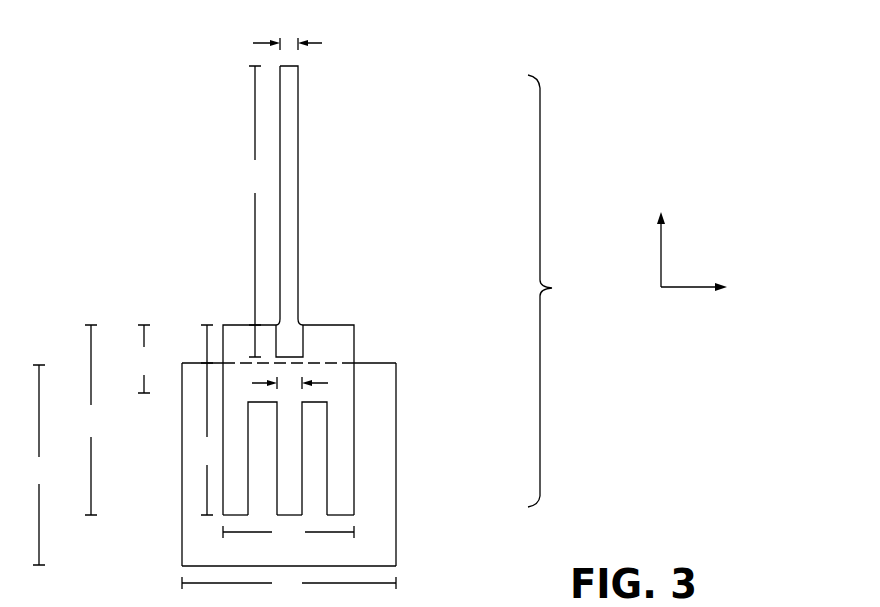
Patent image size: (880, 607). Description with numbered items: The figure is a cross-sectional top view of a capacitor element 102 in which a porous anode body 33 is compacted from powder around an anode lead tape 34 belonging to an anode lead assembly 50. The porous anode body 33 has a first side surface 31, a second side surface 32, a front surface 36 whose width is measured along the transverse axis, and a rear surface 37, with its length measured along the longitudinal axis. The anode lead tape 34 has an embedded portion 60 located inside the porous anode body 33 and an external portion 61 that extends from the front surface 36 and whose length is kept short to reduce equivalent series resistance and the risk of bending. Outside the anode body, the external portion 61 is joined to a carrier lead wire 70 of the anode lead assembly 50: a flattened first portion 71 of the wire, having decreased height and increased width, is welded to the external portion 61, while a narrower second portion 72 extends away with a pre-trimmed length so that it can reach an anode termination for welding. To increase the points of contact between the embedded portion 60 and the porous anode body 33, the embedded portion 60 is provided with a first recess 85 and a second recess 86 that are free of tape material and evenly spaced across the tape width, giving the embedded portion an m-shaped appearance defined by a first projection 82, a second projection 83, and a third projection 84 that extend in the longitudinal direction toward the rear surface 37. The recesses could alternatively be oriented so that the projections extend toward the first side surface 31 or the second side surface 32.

The capacitor element 102 is at (114, 158).
The anode lead assembly 50 is at (555, 291).
The carrier lead wire 70 is at (333, 113).
The second portion of the carrier lead wire 72 is at (298, 200).
The first portion of the carrier lead wire 71 is at (296, 343).
The anode lead tape 34 is at (207, 311).
The external portion of the anode lead tape 61 is at (354, 345).
The front surface 36 is at (386, 363).
The embedded portion of the anode lead tape 60 is at (337, 385).
The first projection 82 is at (262, 500).
The second recess 86 is at (310, 499).
The first recess 85 is at (236, 503).
The second projection 83 is at (288, 502).
The third projection 84 is at (347, 478).
The second side surface 32 is at (396, 424).
The first side surface 31 is at (182, 465).
The rear surface 37 is at (396, 565).
The porous anode body 33 is at (383, 458).